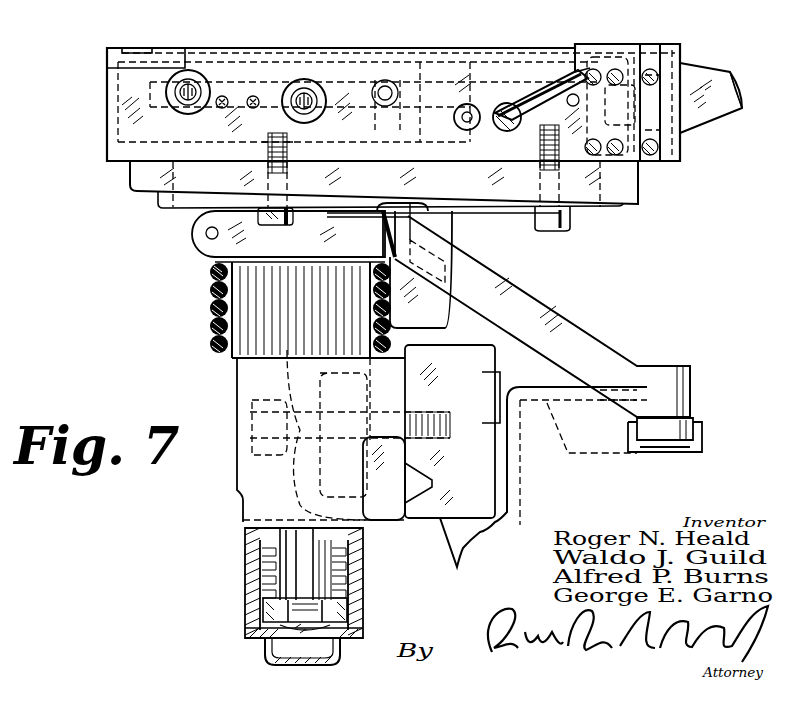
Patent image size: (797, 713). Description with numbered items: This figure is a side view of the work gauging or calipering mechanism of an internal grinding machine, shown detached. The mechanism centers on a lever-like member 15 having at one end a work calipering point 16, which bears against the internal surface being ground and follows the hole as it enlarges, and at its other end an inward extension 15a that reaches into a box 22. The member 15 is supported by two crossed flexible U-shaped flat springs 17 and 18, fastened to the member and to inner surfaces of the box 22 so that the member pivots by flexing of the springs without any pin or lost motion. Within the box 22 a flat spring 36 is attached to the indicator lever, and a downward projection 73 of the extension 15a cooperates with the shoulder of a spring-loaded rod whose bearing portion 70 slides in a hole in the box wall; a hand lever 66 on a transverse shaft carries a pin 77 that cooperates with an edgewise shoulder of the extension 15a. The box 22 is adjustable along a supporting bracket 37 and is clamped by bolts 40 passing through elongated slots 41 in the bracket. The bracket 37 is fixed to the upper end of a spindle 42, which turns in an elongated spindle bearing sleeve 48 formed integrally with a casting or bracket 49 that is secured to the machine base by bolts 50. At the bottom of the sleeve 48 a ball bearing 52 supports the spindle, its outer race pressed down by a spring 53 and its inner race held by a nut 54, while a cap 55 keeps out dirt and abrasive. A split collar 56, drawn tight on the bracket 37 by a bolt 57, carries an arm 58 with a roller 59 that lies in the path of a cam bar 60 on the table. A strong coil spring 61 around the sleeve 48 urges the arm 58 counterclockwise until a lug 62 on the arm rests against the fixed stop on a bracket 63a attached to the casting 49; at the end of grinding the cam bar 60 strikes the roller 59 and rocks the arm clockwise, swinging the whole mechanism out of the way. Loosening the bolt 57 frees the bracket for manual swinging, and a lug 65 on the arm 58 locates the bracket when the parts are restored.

The member 15 is at (696, 115).
The inward extension 15a is at (430, 80).
The work calipering point 16 is at (725, 78).
The flexible U-shaped flat spring 17 is at (602, 70).
The flexible U-shaped flat spring 18 is at (642, 57).
The box 22 is at (107, 136).
The flat spring 36 is at (272, 100).
The supporting bracket 37 is at (135, 172).
The bolt 40 is at (268, 226).
The elongated slot 41 is at (160, 200).
The spindle 42 is at (247, 539).
The spindle bearing sleeve 48 is at (237, 378).
The casting or bracket 49 is at (288, 473).
The bolt 50 is at (250, 428).
The ball bearing 52 is at (263, 606).
The spring 53 is at (260, 570).
The nut 54 is at (265, 640).
The cap 55 is at (285, 665).
The split collar 56 is at (210, 248).
The bolt 57 is at (206, 233).
The arm 58 is at (525, 307).
The roller 59 is at (692, 420).
The cam bar 60 is at (700, 438).
The coil spring 61 is at (212, 323).
The lug 62 is at (458, 254).
The bracket 63a is at (446, 317).
The lug 65 is at (420, 222).
The hand lever 66 is at (576, 52).
The bearing portion 70 is at (467, 105).
The downward projection 73 is at (497, 104).
The pin 77 is at (520, 103).